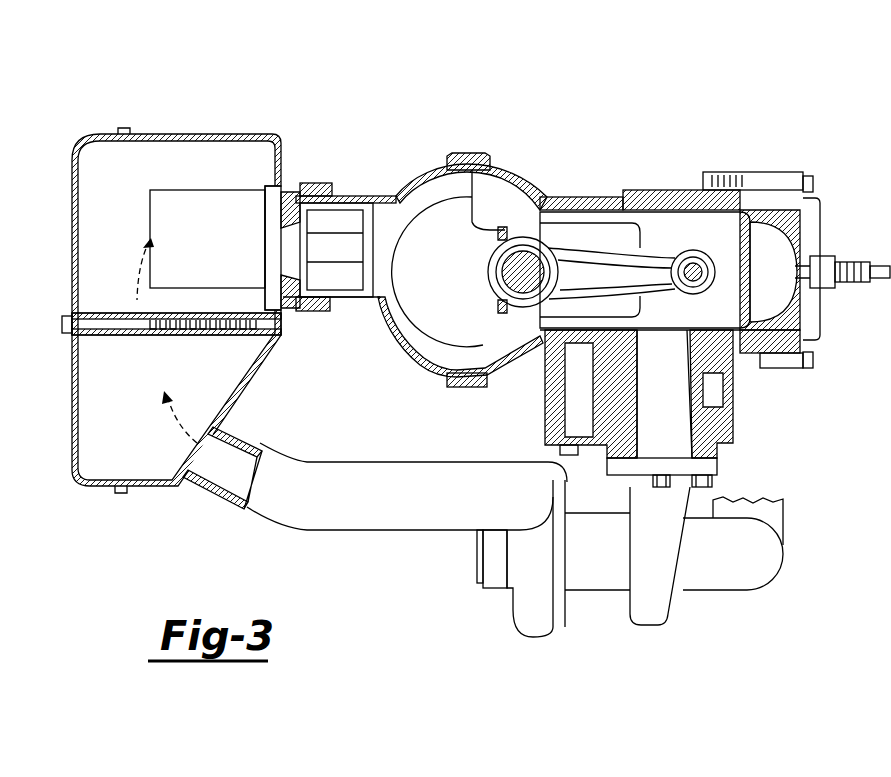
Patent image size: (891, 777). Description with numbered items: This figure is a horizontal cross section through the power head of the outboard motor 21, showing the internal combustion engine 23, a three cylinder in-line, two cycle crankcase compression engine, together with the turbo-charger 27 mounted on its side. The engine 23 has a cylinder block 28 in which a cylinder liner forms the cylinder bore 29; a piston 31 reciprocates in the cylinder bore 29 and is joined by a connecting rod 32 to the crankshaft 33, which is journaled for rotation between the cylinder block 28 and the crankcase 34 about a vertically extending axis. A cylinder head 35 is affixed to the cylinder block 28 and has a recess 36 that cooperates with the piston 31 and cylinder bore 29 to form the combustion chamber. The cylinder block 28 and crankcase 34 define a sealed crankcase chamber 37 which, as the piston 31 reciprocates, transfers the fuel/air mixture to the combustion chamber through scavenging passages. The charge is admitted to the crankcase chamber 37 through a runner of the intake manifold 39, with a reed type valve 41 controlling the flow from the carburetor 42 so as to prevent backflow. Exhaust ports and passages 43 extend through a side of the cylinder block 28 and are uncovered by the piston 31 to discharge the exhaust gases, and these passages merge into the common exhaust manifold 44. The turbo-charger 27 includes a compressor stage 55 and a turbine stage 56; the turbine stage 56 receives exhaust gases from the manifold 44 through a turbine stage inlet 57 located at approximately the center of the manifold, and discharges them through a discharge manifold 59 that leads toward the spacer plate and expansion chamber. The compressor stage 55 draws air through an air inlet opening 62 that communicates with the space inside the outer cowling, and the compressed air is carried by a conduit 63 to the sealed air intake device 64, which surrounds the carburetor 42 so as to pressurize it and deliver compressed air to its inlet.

The outboard motor 21 is at (643, 135).
The internal combustion engine 23 is at (806, 168).
The turbo-charger 27 is at (595, 592).
The cylinder block 28 is at (568, 197).
The cylinder bore 29 is at (660, 213).
The piston 31 is at (747, 213).
The connecting rod 32 is at (600, 257).
The crankshaft 33 is at (523, 258).
The crankcase 34 is at (435, 177).
The cylinder head 35 is at (768, 239).
The recess 36 is at (767, 250).
The crankcase chamber 37 is at (435, 192).
The intake manifold 39 is at (363, 193).
The reed type valve 41 is at (340, 230).
The carburetor 42 is at (222, 208).
The exhaust port and passage 43 is at (663, 343).
The exhaust manifold 44 is at (667, 425).
The compressor stage 55 is at (533, 607).
The turbine stage 56 is at (645, 607).
The turbine stage inlet 57 is at (667, 500).
The discharge manifold 59 is at (765, 590).
The air inlet opening 62 is at (492, 570).
The conduit 63 is at (355, 508).
The sealed air intake device 64 is at (172, 133).